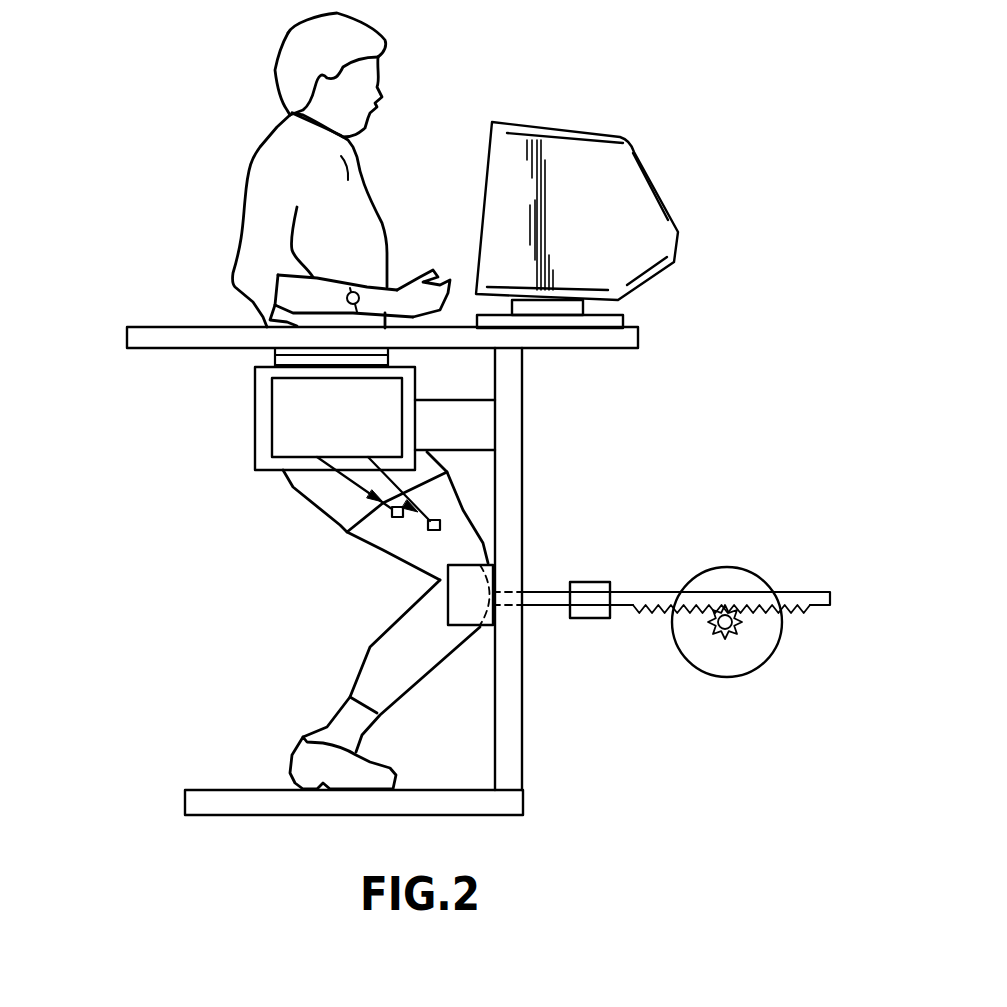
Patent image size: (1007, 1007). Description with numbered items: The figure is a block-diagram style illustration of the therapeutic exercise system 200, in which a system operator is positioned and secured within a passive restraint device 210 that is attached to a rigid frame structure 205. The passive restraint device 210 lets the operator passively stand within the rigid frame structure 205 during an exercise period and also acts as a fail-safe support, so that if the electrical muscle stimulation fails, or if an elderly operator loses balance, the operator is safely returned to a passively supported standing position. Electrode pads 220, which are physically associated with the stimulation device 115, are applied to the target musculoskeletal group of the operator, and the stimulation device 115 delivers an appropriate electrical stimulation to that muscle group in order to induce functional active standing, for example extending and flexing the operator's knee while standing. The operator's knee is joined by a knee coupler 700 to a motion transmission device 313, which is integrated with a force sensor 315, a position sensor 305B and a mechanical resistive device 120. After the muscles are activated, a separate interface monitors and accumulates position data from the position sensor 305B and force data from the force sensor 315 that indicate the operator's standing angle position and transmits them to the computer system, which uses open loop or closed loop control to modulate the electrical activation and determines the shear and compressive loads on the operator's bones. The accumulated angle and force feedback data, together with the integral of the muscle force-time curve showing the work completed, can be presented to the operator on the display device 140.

The therapeutic exercise system 200 is at (203, 148).
The rigid frame structure 205 is at (170, 323).
The display device 140 is at (635, 192).
The passive restraint device 210 is at (255, 421).
The stimulation device 115 is at (280, 442).
The electrode pads 220 is at (433, 532).
The knee coupler 700 is at (445, 590).
The motion transmission device 313 is at (798, 592).
The force sensor 315 is at (591, 582).
The mechanical resistive device 120 is at (725, 677).
The position sensor 305B is at (740, 628).